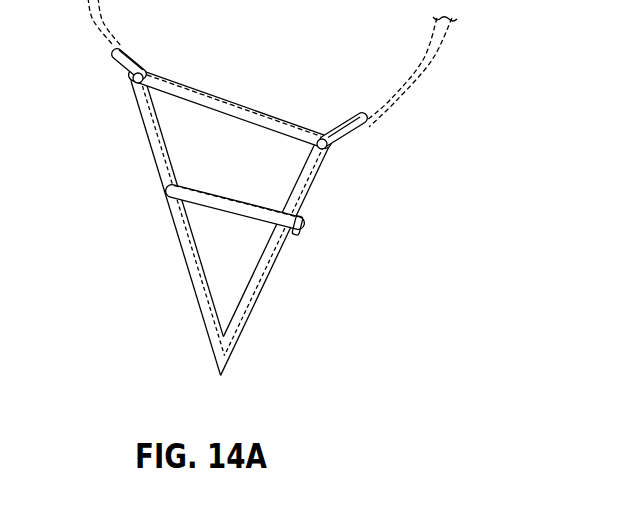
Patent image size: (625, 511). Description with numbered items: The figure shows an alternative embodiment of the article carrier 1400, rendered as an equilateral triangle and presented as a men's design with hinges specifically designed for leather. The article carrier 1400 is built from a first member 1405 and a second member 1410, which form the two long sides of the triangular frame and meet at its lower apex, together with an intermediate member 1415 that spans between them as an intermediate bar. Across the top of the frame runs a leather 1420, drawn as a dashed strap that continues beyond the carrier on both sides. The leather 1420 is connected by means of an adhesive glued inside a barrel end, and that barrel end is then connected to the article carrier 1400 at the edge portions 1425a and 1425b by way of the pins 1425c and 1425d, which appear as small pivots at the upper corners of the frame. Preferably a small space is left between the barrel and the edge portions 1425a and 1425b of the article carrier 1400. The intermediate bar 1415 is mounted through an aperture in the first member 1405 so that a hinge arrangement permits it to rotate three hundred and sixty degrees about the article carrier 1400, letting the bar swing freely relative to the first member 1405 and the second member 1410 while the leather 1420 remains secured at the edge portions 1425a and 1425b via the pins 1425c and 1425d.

The article carrier 1400 is at (268, 48).
The first member 1405 is at (150, 135).
The second member 1410 is at (308, 198).
The intermediate member 1415 is at (205, 190).
The leather 1420 is at (436, 56).
The edge portion 1425a is at (140, 67).
The edge portion 1425b is at (344, 138).
The pin 1425c is at (135, 79).
The pin 1425d is at (326, 146).